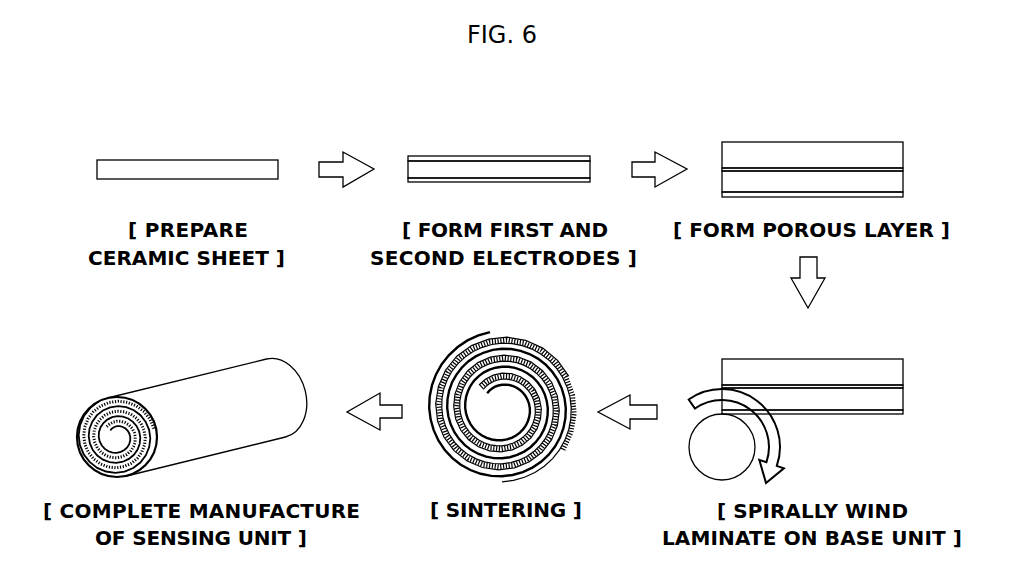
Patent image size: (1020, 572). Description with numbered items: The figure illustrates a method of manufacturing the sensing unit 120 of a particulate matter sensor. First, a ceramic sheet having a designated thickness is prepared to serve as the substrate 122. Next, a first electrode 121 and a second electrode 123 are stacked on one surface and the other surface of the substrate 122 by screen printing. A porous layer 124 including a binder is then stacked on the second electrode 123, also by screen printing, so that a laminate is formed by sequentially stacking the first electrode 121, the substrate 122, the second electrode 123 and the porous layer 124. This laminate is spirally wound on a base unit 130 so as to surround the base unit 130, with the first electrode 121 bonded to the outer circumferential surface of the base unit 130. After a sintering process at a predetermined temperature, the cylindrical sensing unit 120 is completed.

The sensing unit 120 is at (170, 381).
The first electrode 121 is at (495, 166).
The substrate 122 is at (187, 170).
The second electrode 123 is at (507, 155).
The porous layer 124 is at (752, 150).
The base unit 130 is at (697, 448).